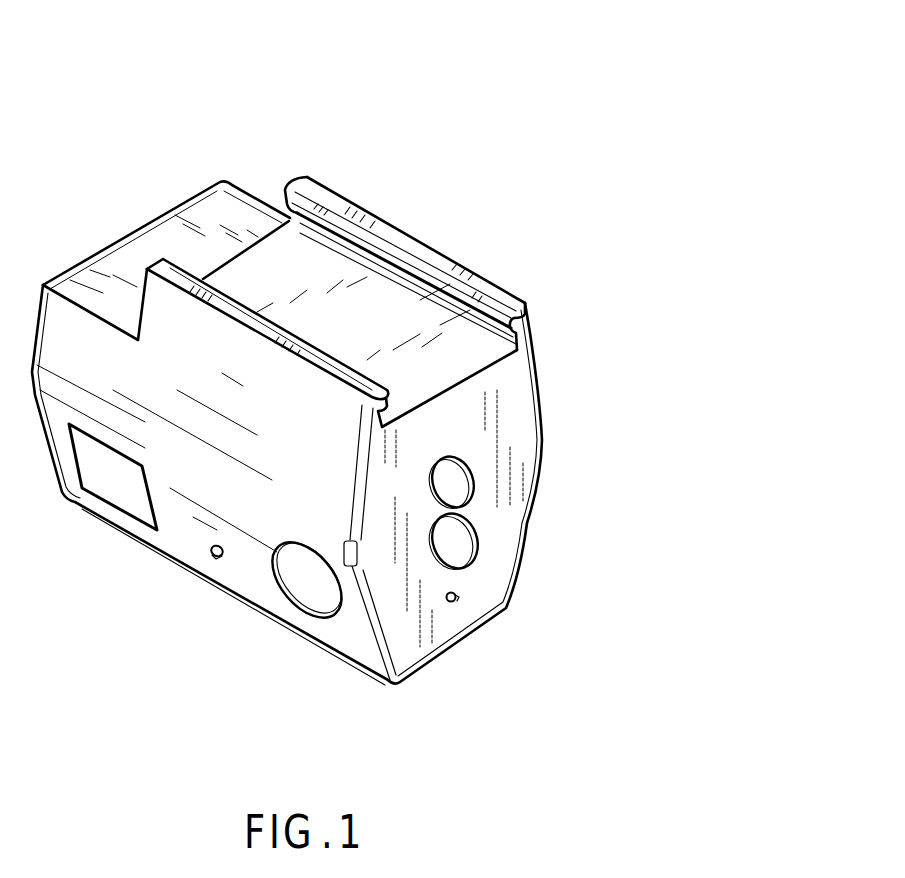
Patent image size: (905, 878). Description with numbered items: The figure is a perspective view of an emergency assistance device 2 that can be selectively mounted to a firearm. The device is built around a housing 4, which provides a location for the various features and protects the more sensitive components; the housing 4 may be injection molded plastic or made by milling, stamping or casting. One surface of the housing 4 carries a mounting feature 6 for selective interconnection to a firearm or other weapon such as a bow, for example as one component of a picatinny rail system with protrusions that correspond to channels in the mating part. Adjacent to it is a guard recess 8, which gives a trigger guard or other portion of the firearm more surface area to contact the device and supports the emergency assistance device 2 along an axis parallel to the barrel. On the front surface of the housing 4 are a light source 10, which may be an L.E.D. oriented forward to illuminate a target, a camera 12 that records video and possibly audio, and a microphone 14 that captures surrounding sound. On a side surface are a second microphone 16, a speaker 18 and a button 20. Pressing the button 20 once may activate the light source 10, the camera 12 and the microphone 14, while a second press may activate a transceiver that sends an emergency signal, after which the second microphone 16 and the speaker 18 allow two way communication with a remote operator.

The emergency assistance device 2 is at (473, 108).
The housing 4 is at (343, 193).
The mounting feature 6 is at (380, 313).
The guard recess 8 is at (143, 248).
The light source 10 is at (466, 478).
The camera 12 is at (463, 543).
The microphone 14 is at (457, 601).
The second microphone 16 is at (215, 560).
The speaker 18 is at (107, 488).
The button 20 is at (310, 598).